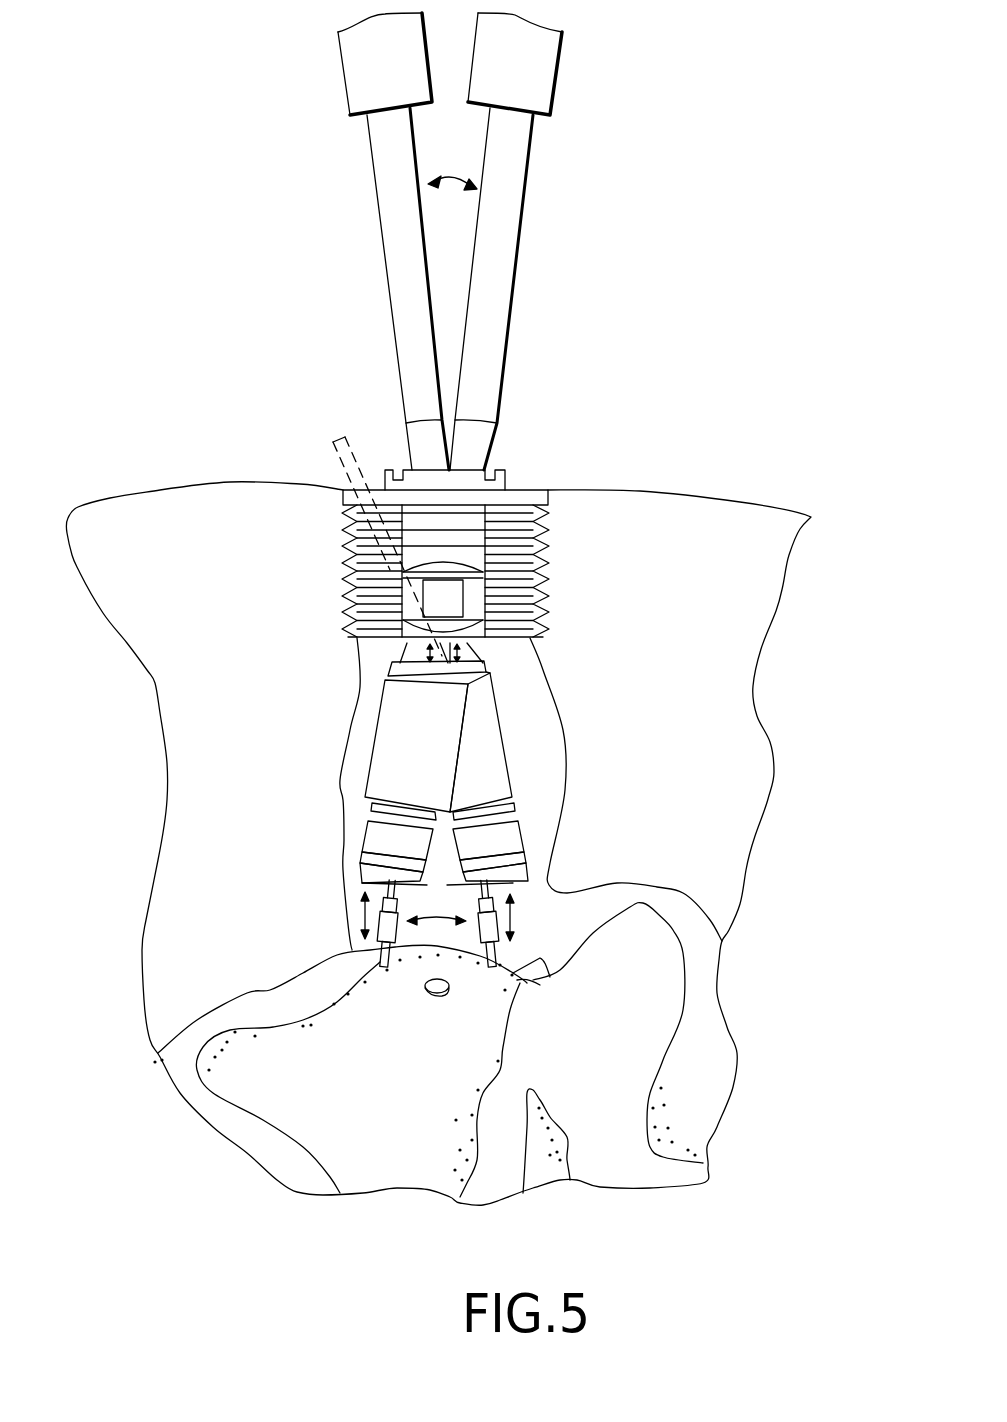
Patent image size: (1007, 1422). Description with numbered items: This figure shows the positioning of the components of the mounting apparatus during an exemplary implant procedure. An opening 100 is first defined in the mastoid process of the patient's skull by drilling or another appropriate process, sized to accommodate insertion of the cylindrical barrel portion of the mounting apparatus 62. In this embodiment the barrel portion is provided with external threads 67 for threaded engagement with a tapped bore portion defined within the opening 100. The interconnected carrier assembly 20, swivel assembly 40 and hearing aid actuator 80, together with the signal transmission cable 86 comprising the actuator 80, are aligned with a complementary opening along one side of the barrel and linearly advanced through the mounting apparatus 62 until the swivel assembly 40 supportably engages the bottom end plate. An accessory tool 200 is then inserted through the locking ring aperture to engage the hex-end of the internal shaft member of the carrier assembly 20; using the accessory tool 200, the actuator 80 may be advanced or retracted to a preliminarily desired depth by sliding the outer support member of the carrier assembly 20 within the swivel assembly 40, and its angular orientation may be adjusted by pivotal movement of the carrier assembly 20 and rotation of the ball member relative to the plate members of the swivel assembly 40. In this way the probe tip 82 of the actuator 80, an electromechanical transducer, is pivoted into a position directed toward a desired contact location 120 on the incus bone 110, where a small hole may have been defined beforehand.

The accessory tool 200 is at (558, 72).
The signal transmission cable 86 is at (333, 457).
The external threads 67 is at (547, 540).
The mounting apparatus 62 is at (330, 566).
The swivel assembly 40 is at (485, 587).
The carrier assembly 20 is at (380, 652).
The hearing aid actuator 80 is at (516, 722).
The probe tip 82 is at (378, 950).
The opening 100 is at (543, 778).
The incus bone 110 is at (541, 960).
The contact location 120 is at (448, 995).